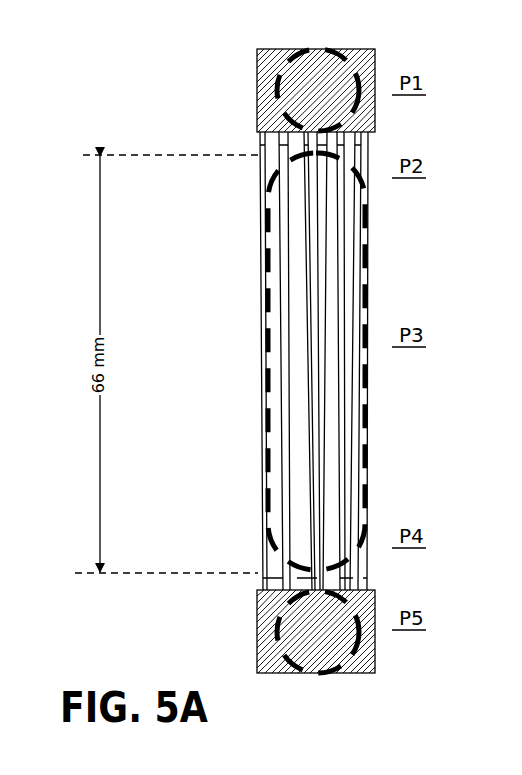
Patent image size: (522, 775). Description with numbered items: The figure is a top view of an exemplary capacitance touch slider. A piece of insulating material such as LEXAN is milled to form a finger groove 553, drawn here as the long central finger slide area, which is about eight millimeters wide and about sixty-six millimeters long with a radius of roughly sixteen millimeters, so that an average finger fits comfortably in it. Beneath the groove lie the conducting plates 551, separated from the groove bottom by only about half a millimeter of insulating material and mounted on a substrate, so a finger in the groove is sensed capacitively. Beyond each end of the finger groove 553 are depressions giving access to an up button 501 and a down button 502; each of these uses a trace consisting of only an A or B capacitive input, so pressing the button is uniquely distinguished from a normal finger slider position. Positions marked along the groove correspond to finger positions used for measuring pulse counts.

The conducting plates 551 is at (116, 112).
The up button 501 is at (271, 84).
The down button 502 is at (288, 636).
The finger groove 553 is at (301, 264).